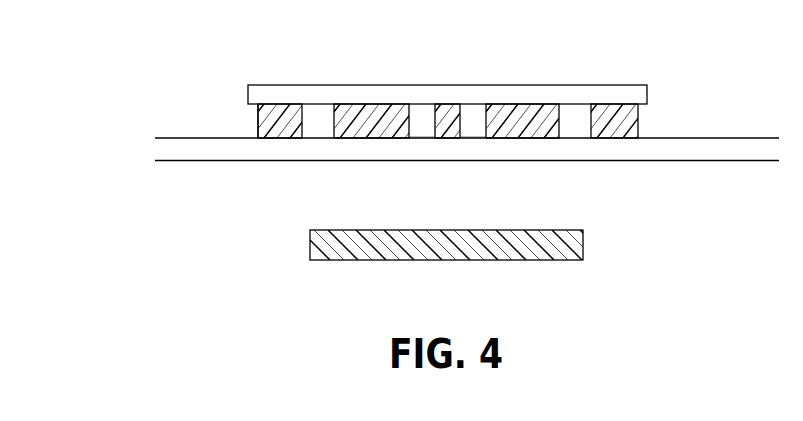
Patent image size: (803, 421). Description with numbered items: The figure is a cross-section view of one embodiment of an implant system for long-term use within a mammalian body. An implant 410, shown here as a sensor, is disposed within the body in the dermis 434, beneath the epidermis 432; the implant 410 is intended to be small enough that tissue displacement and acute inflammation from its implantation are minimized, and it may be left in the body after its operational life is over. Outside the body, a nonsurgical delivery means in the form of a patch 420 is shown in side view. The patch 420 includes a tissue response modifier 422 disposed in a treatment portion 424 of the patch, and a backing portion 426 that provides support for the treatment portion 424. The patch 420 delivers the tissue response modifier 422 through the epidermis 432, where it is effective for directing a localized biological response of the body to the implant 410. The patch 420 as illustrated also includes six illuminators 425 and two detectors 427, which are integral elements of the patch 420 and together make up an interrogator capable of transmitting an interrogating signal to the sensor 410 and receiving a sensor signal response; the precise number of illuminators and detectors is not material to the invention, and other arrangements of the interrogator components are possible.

The patch 420 is at (364, 57).
The tissue response modifier 422 is at (256, 113).
The treatment portion 424 is at (270, 126).
The illuminators 425 is at (570, 125).
The backing portion 426 is at (487, 93).
The detectors 427 is at (477, 130).
The epidermis 432 is at (168, 151).
The dermis 434 is at (168, 226).
The implant 410 is at (585, 243).